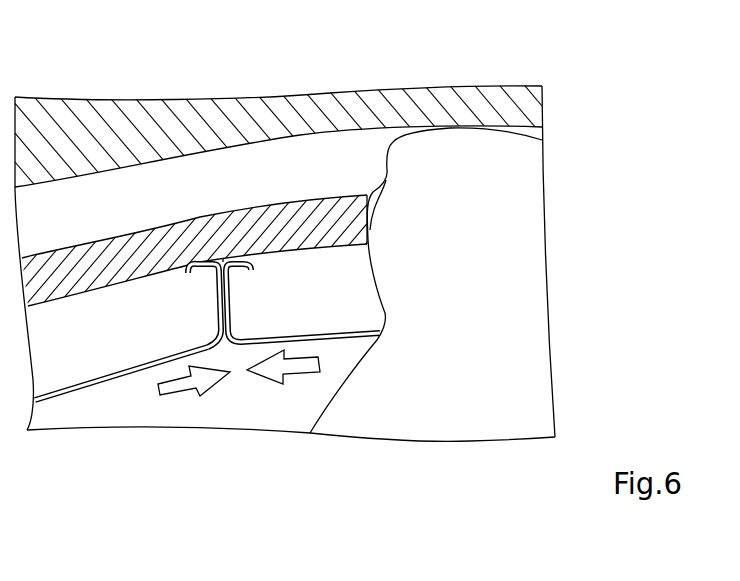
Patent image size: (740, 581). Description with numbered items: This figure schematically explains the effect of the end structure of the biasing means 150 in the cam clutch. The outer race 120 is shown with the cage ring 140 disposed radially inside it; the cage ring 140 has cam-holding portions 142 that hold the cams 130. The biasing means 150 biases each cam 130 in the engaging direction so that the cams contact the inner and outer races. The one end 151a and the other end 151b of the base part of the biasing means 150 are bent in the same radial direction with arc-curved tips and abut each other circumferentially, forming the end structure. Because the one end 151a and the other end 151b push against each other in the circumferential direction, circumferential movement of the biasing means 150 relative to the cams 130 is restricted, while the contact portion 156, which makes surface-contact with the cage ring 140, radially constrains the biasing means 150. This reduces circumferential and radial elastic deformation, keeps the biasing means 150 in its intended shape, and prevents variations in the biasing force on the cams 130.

The outer race 120 is at (423, 100).
The cam 130 is at (487, 292).
The cage ring 140 is at (87, 253).
The cam-holding portion 142 is at (386, 180).
The biasing means 150 is at (110, 386).
The one end of the base part 151a is at (196, 262).
The other end of the base part 151b is at (243, 258).
The contact portion 156 is at (223, 258).